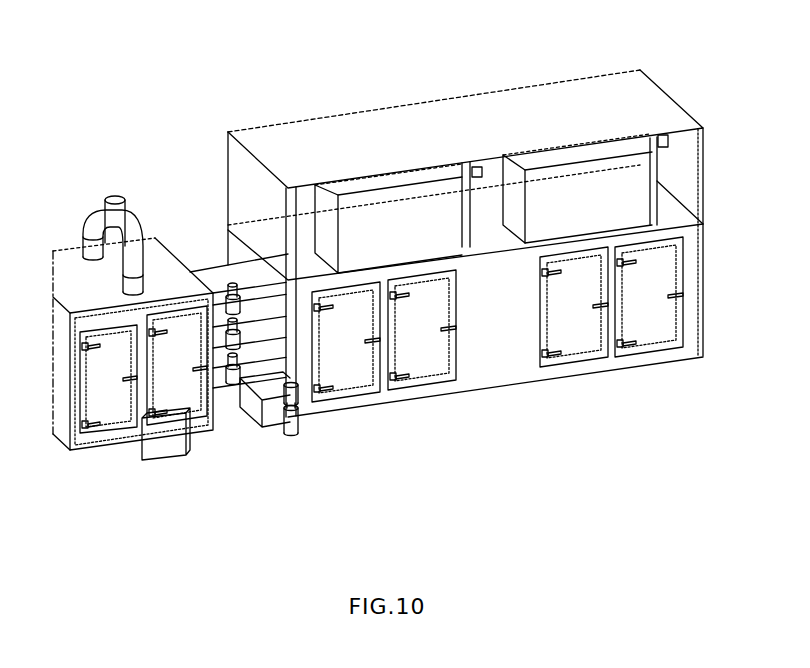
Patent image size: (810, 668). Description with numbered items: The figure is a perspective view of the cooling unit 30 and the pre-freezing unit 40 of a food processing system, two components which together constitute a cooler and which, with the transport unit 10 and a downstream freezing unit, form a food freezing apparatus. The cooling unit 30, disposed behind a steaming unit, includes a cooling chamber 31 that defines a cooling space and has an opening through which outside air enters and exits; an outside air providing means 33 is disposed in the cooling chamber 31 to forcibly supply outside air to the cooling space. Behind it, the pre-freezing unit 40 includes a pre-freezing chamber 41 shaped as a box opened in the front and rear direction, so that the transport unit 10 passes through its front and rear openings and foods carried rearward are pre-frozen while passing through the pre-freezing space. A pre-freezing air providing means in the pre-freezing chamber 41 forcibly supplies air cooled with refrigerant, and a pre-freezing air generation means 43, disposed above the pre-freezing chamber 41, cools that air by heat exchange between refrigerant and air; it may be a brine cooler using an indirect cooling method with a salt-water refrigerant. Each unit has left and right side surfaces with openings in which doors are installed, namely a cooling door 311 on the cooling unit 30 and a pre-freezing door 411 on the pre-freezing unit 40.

The transport unit 10 is at (212, 264).
The cooling unit 30 is at (133, 311).
The cooling chamber 31 is at (155, 230).
The outside air providing means 33 is at (118, 182).
The cooling door 311 is at (115, 415).
The pre-freezing unit 40 is at (465, 240).
The pre-freezing chamber 41 is at (497, 345).
The pre-freezing door 411 is at (432, 370).
The pre-freezing air generation means 43 is at (430, 172).